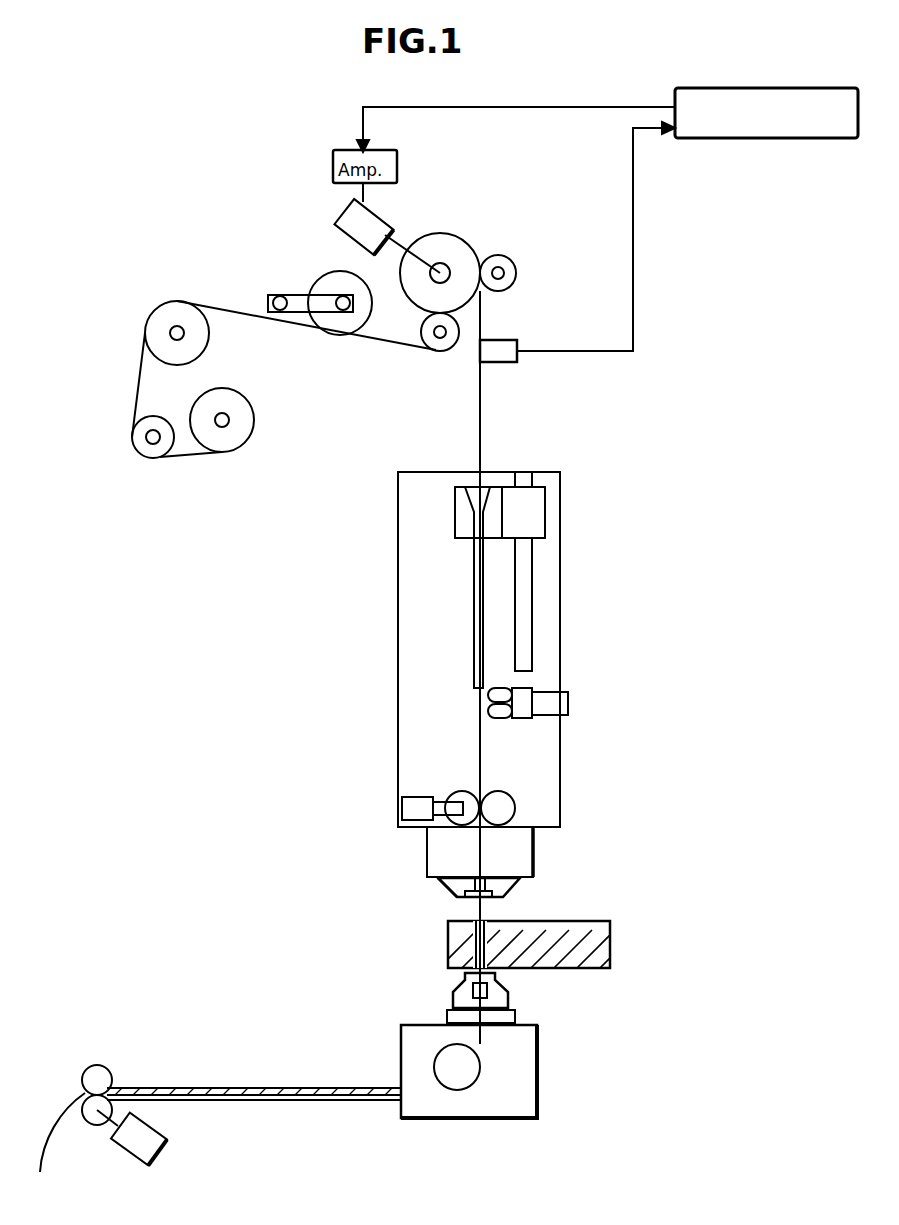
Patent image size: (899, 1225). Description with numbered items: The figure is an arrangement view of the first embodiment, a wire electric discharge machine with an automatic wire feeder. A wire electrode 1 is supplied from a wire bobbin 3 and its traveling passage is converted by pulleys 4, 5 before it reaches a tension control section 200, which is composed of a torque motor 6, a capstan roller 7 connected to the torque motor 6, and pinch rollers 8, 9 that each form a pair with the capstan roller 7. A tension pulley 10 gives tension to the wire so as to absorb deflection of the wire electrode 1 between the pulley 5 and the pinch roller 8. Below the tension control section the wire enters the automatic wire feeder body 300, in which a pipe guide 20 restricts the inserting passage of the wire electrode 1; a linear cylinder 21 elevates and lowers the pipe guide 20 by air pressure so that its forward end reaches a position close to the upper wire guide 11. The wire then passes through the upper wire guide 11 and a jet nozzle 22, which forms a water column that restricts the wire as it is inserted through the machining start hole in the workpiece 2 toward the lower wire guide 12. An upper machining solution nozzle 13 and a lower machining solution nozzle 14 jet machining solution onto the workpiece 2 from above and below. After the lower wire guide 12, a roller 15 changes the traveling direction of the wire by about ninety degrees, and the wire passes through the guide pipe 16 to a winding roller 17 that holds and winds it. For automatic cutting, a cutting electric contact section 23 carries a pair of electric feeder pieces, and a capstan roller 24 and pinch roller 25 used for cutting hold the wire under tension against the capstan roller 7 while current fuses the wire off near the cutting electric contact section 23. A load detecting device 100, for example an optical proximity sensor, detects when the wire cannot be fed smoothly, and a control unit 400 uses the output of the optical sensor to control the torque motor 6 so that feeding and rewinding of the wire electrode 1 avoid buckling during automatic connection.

The wire electrode 1 is at (482, 412).
The workpiece 2 is at (600, 921).
The wire bobbin 3 is at (240, 423).
The pulley 4 is at (135, 442).
The pulley 5 is at (150, 327).
The torque motor 6 is at (380, 221).
The capstan roller 7 is at (462, 250).
The pinch roller 8 is at (445, 351).
The pinch roller 9 is at (518, 266).
The tension pulley 10 is at (328, 283).
The upper wire guide 11 is at (520, 882).
The lower wire guide 12 is at (510, 992).
The upper machining solution nozzle 13 is at (445, 882).
The lower machining solution nozzle 14 is at (455, 995).
The roller 15 is at (445, 1065).
The guide pipe 16 is at (255, 1088).
The winding roller 17 is at (92, 1085).
The pipe guide 20 is at (474, 588).
The linear cylinder 21 is at (533, 545).
The jet nozzle 22 is at (460, 897).
The cutting electric contact section 23 is at (533, 691).
The capstan roller for cutting 24 is at (505, 800).
The pinch roller for cutting 25 is at (455, 797).
The load detecting device 100 is at (502, 343).
The tension control section 200 is at (410, 292).
The automatic wire feeder body 300 is at (492, 649).
The control unit 400 is at (724, 88).